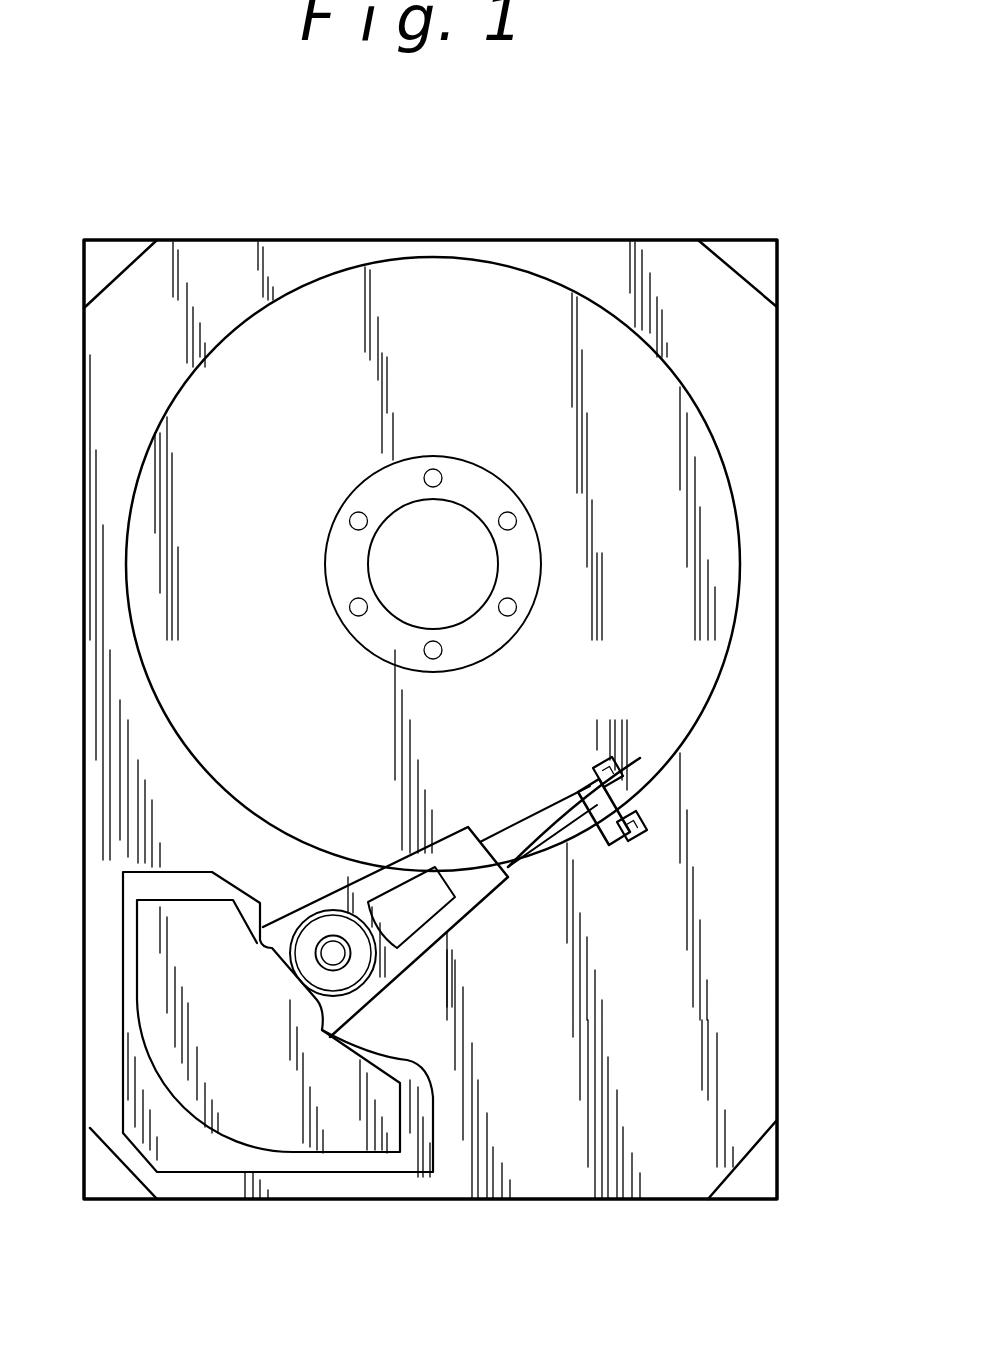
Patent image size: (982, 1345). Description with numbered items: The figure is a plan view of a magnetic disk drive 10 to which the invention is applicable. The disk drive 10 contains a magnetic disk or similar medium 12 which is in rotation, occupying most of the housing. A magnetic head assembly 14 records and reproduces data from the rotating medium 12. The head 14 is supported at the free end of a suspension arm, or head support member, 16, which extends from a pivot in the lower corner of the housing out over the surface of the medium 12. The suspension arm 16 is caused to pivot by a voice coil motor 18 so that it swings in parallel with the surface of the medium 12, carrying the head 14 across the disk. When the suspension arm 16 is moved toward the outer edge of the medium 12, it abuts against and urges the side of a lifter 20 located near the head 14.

The magnetic disk drive 10 is at (673, 210).
The magnetic disk 12 is at (438, 258).
The magnetic head assembly 14 is at (645, 760).
The suspension arm 16 is at (533, 810).
The voice coil motor 18 is at (413, 1140).
The lifter 20 is at (628, 838).